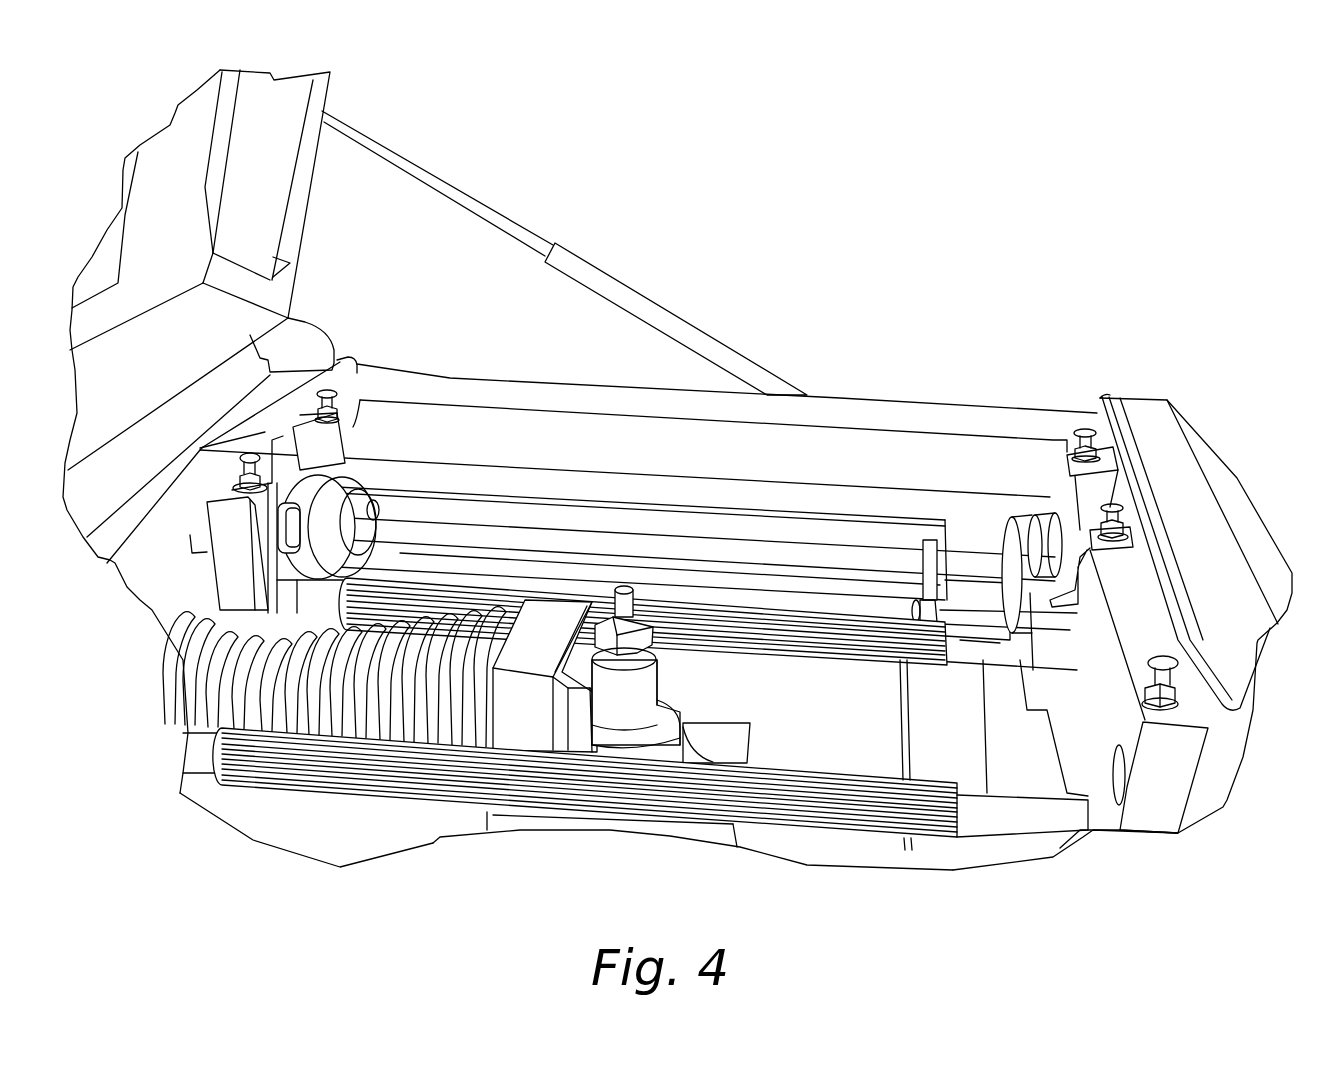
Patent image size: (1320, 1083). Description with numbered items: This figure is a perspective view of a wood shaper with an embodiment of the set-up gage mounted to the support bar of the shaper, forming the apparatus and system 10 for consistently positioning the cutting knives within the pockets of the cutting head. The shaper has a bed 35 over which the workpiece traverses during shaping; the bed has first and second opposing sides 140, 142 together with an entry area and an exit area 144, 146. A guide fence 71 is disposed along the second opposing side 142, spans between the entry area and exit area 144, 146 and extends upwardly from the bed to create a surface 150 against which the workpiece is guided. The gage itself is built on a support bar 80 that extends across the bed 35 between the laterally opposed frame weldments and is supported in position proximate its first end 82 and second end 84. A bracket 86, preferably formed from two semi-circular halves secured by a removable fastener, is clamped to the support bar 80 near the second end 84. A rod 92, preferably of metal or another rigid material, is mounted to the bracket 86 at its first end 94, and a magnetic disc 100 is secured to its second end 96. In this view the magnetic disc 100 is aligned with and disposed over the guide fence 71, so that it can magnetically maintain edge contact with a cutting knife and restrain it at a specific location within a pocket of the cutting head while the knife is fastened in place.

The apparatus and system 10 is at (1255, 397).
The bed 35 is at (795, 848).
The guide fence 71 is at (898, 712).
The support bar 80 is at (850, 553).
The first end 82 is at (385, 442).
The second end 84 is at (1062, 545).
The bracket 86 is at (933, 548).
The rod 92 is at (985, 605).
The first end 94 is at (940, 590).
The second end 96 is at (925, 624).
The magnetic disc 100 is at (912, 628).
The first opposing side 140 is at (283, 834).
The second opposing side 142 is at (1003, 867).
The entry area 144 is at (554, 843).
The exit area 146 is at (912, 392).
The surface 150 is at (903, 843).